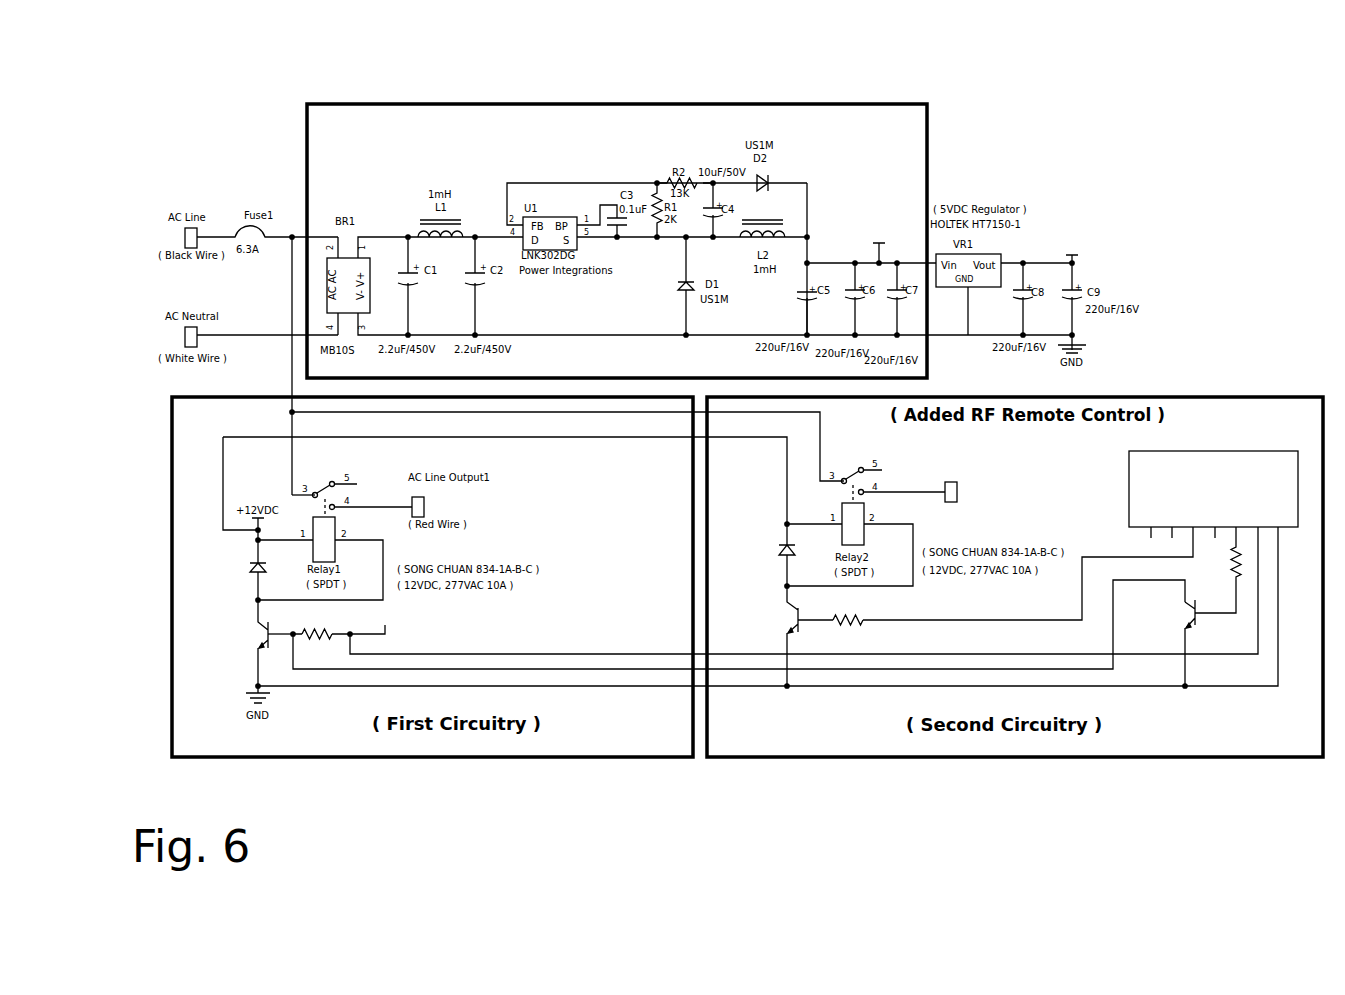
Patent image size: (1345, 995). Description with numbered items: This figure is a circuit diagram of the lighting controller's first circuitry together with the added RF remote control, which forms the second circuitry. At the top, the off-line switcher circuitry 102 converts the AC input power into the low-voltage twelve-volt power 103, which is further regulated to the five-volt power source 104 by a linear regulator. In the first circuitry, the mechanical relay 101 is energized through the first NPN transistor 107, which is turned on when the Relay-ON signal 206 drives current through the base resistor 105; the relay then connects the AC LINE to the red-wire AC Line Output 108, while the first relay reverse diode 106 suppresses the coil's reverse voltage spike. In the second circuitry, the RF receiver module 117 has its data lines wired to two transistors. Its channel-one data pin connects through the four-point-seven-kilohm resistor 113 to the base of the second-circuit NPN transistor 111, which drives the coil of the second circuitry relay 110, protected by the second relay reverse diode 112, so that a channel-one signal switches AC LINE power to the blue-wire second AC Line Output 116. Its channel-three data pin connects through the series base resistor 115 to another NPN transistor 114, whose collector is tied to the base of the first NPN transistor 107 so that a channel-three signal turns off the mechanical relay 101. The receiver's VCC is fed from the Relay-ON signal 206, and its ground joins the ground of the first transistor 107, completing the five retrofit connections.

The mechanical relay 101 is at (353, 473).
The off-line switcher circuitry 102 is at (803, 102).
The +12 VDC power 103 is at (878, 222).
The +5 VDC power source 104 is at (1075, 233).
The resistor R3 105 is at (985, 197).
The relay reverse diode D3 106 is at (227, 560).
The NPN transistor Q1 107 is at (219, 639).
The AC Line Output1 108 is at (490, 478).
The second circuitry relay Relay2 110 is at (884, 459).
The NPN transistor Q5 111 is at (742, 612).
The relay reverse diode D4 112 is at (750, 545).
The 4.7K ohm resistor R4 113 is at (842, 607).
The NPN transistor Q6 114 is at (1156, 607).
The series base resistor 3K ohm R5 115 is at (1205, 574).
The AC Line Output2 116 is at (997, 485).
The RF receiver module 117 is at (1218, 447).
The Relay1-ON 206 is at (416, 617).